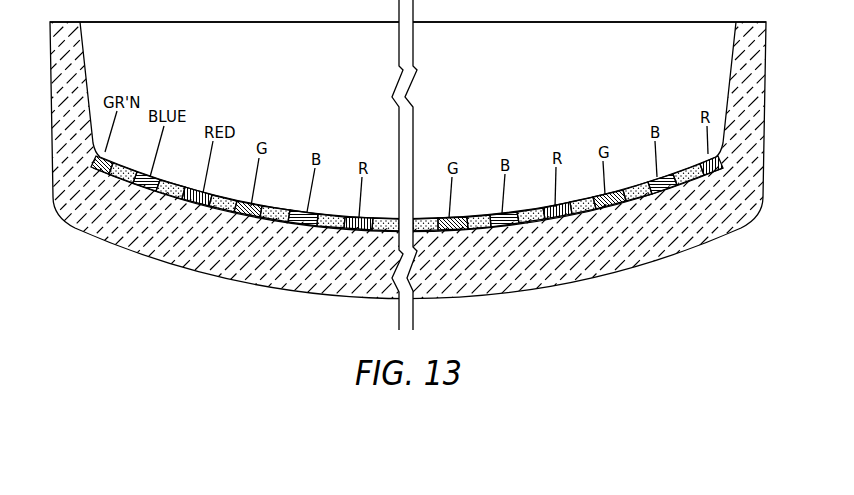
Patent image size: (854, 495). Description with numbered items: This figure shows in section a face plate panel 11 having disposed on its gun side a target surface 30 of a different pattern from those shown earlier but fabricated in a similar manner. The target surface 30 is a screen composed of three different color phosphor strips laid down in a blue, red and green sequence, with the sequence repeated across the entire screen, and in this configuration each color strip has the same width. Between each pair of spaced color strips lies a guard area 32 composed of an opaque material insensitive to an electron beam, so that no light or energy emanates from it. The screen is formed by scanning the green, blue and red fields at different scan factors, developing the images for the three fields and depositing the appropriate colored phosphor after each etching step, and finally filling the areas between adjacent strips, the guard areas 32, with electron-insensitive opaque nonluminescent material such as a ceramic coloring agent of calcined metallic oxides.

The face plate panel 11 is at (178, 266).
The target surface 30 is at (294, 181).
The guard area 32 is at (120, 167).